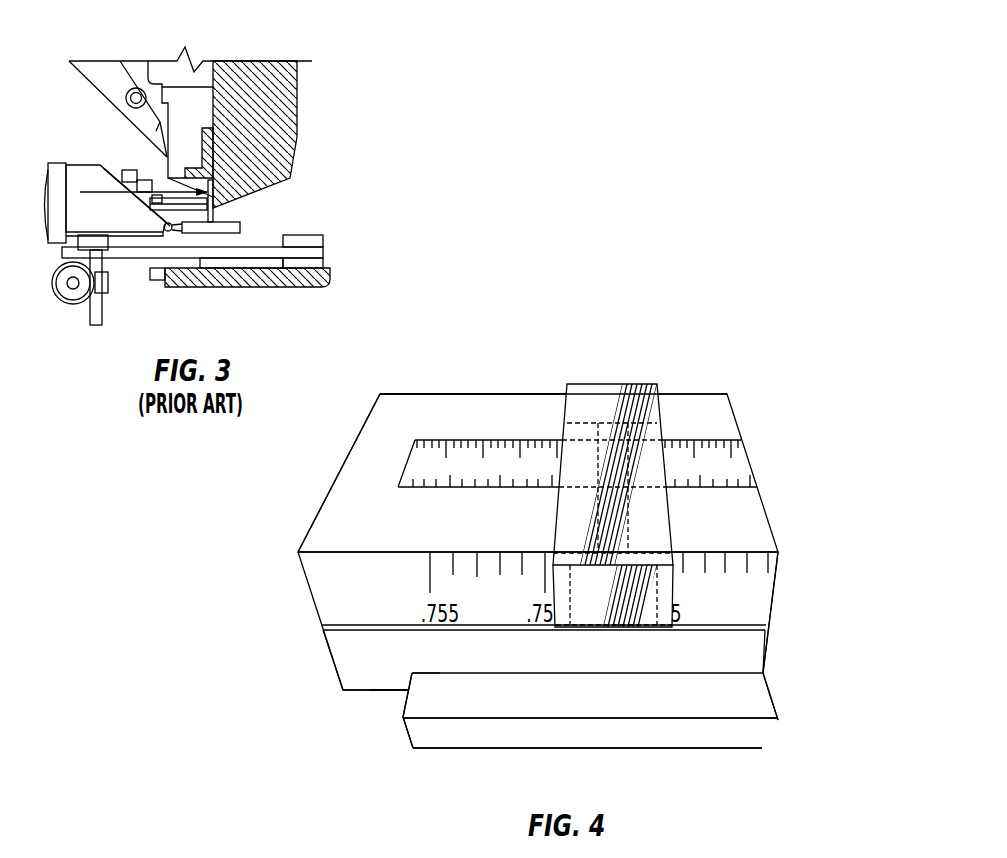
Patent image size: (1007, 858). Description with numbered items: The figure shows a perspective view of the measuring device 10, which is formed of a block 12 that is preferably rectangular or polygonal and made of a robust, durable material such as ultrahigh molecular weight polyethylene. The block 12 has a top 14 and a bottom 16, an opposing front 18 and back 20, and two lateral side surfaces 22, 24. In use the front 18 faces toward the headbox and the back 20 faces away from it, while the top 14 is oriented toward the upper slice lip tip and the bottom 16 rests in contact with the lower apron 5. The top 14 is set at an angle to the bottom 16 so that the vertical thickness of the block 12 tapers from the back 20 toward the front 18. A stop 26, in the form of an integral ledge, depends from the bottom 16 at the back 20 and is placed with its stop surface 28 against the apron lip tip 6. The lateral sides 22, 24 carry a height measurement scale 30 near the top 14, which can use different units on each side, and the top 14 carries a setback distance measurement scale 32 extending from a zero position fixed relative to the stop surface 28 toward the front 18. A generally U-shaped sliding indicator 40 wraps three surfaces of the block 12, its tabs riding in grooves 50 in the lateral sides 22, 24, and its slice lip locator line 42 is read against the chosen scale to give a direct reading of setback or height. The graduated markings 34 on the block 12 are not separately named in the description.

The lower apron 5 is at (612, 713).
The apron lip tip 6 is at (403, 707).
The measuring device 10 is at (276, 570).
The block 12 is at (330, 527).
The top 14 is at (697, 394).
The bottom 16 is at (712, 712).
The front 18 is at (778, 582).
The back 20 is at (315, 592).
The lateral side surface 22 is at (348, 692).
The lateral side surface 24 is at (476, 393).
The stop 26 is at (385, 692).
The stop surface 28 is at (417, 680).
The height measurement scale 30 is at (781, 561).
The setback distance measurement scale 32 is at (733, 466).
The scale 34 is at (408, 456).
The sliding indicator 40 is at (621, 388).
The slice lip locator line 42 is at (672, 523).
The grooves 50 is at (348, 630).